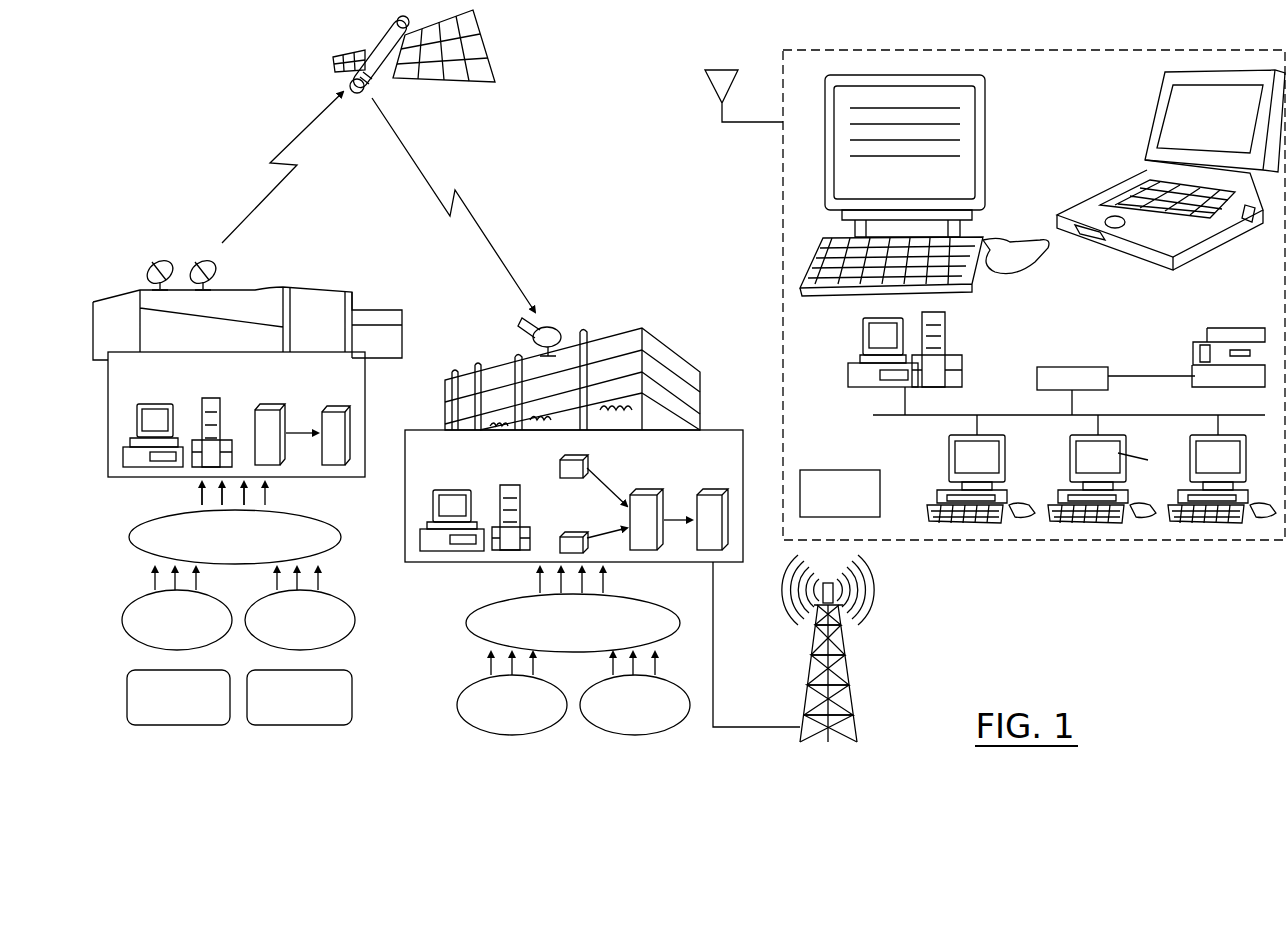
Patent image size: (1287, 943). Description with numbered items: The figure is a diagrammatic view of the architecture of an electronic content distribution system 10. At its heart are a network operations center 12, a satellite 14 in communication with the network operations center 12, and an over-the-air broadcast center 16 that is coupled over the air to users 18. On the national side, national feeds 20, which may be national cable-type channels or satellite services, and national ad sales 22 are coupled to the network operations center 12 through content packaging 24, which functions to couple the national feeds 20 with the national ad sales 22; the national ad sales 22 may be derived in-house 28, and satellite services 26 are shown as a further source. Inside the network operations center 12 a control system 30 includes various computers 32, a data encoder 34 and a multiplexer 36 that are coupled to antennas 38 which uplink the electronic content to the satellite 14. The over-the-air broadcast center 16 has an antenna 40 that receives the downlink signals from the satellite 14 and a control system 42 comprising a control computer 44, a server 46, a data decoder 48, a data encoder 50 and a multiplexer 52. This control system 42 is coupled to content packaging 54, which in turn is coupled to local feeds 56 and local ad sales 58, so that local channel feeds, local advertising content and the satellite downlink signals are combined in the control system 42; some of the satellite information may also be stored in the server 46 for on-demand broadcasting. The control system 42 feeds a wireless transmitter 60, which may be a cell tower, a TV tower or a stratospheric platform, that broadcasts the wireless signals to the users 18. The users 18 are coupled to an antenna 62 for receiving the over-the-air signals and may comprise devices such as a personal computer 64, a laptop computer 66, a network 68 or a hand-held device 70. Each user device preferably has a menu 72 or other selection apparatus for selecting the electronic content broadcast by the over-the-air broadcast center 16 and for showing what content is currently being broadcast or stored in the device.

The electronic content distribution system 10 is at (556, 112).
The network operations center 12 is at (128, 296).
The satellite 14 is at (372, 42).
The over-the-air broadcast center 16 is at (665, 346).
The users 18 is at (950, 541).
The national feeds 20 is at (210, 594).
The national ad sales 22 is at (346, 599).
The content packaging 24 is at (318, 520).
The satellite services 26 is at (182, 727).
The in-house 28 is at (302, 727).
The control system 30 is at (153, 479).
The computers 32 is at (190, 395).
The data encoder 34 is at (279, 466).
The multiplexer 36 is at (347, 421).
The antennas 38 is at (203, 258).
The antenna 40 is at (556, 326).
The control system 42 is at (405, 520).
The control computer 44 is at (482, 475).
The server 46 is at (558, 470).
The data decoder 48 is at (586, 548).
The data encoder 50 is at (657, 551).
The multiplexer 52 is at (730, 514).
The content packaging 54 is at (467, 622).
The local feeds 56 is at (458, 700).
The local ad sales 58 is at (618, 733).
The wireless transmitter 60 is at (851, 676).
The antenna 62 is at (767, 125).
The personal computer 64 is at (845, 370).
The laptop computer 66 is at (1203, 247).
The network 68 is at (1120, 413).
The hand-held device 70 is at (882, 486).
The menu 72 is at (988, 139).